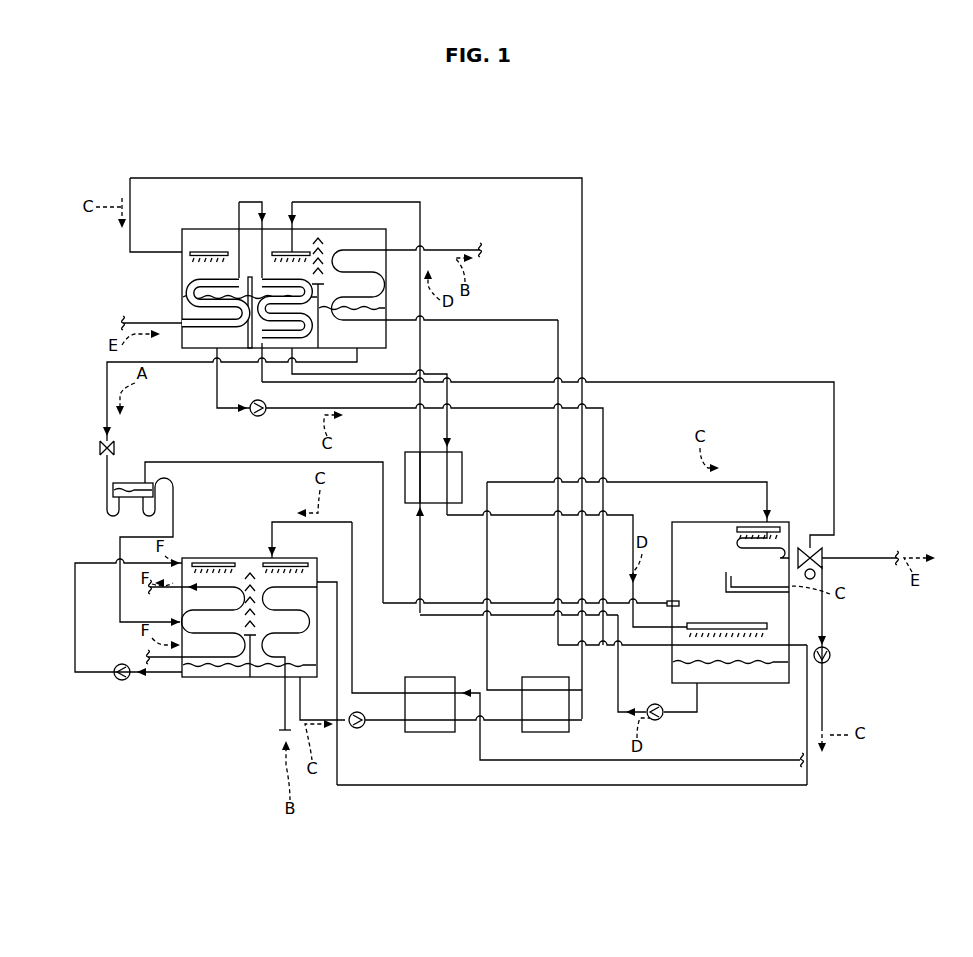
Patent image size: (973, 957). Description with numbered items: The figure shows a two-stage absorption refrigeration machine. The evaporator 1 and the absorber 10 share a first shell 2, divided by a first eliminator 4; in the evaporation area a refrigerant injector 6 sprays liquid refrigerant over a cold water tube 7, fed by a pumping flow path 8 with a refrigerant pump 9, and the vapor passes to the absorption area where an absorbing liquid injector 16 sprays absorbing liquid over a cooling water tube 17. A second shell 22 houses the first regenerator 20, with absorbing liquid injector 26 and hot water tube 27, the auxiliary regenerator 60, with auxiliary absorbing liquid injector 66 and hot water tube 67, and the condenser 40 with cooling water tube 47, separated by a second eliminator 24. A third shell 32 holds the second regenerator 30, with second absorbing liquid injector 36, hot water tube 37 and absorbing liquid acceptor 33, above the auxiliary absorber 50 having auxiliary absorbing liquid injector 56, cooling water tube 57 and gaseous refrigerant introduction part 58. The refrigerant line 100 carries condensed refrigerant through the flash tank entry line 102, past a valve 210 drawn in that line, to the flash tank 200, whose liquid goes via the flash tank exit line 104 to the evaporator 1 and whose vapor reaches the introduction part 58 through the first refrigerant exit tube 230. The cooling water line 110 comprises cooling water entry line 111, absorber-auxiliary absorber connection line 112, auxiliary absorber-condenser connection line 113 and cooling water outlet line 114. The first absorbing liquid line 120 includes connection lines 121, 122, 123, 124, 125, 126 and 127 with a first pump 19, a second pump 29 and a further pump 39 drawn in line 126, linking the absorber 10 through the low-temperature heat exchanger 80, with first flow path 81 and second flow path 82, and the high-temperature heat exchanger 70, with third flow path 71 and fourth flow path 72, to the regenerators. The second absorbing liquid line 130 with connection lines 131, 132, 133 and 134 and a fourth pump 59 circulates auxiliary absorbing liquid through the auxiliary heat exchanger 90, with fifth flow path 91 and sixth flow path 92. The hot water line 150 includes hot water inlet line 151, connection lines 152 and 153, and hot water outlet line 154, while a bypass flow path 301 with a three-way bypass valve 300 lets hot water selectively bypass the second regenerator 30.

The evaporator 1 is at (186, 700).
The first shell 2 is at (184, 557).
The first eliminator 4 is at (250, 572).
The refrigerant injector 6 is at (211, 562).
The cold water tube 7 is at (228, 662).
The pumping flow path 8 is at (74, 657).
The refrigerant pump 9 is at (116, 680).
The absorber 10 is at (256, 700).
The absorbing liquid injector 16 is at (289, 562).
The cooling water tube 17 is at (298, 628).
The first pump 19 is at (357, 729).
The first regenerator 20 is at (172, 238).
The second shell 22 is at (184, 228).
The second eliminator 24 is at (322, 233).
The absorbing liquid injector 26 is at (195, 258).
The hot water tube 27 is at (195, 290).
The second pump 29 is at (258, 418).
The second regenerator 30 is at (800, 520).
The third shell 32 is at (772, 520).
The absorbing liquid acceptor 33 is at (790, 578).
The second absorbing liquid injector 36 is at (740, 525).
The hot water tube 37 is at (722, 545).
The pump 39 is at (832, 656).
The condenser 40 is at (388, 207).
The cooling water tube 47 is at (383, 292).
The auxiliary absorber 50 is at (778, 700).
The auxiliary absorbing liquid injector 56 is at (745, 621).
The cooling water tube 57 is at (786, 644).
The gaseous refrigerant introduction part 58 is at (680, 601).
The fourth pump 59 is at (658, 721).
The auxiliary regenerator 60 is at (281, 205).
The auxiliary absorbing liquid injector 66 is at (298, 250).
The hot water tube 67 is at (283, 290).
The high-temperature heat exchanger 70 is at (570, 725).
The third flow path 71 is at (547, 726).
The fourth flow path 72 is at (546, 688).
The low-temperature heat exchanger 80 is at (448, 733).
The first flow path 81 is at (430, 726).
The second flow path 82 is at (429, 690).
The auxiliary heat exchanger 90 is at (404, 462).
The fifth flow path 91 is at (418, 505).
The sixth flow path 92 is at (449, 469).
The refrigerant line 100 is at (80, 377).
The flash tank entry line 102 is at (106, 402).
The flash tank exit line 104 is at (119, 540).
The cooling water line 110 is at (406, 800).
The cooling water entry line 111 is at (280, 735).
The absorber-auxiliary absorber connection line 112 is at (371, 788).
The auxiliary absorber-condenser connection line 113 is at (556, 636).
The cooling water outlet line 114 is at (462, 248).
The first absorbing liquid line 120 is at (471, 762).
The absorber-low-temperature heat exchanger connection line 121 is at (317, 718).
The low-temperature heat exchanger-high-temperature heat exchanger connection line 122 is at (500, 722).
The high-temperature heat exchanger-first regenerator connection line 123 is at (584, 275).
The first regenerator-high-temperature heat exchanger connection line 124 is at (216, 387).
The high-temperature heat exchanger-second regenerator connection line 125 is at (489, 567).
The second regenerator-low-temperature heat exchanger connection line 126 is at (824, 622).
The low-temperature heat exchanger-absorber connection line 127 is at (354, 639).
The second absorbing liquid line 130 is at (493, 356).
The auxiliary absorber-auxiliary heat exchanger connection line 131 is at (620, 692).
The auxiliary heat exchanger-auxiliary regenerator connection line 132 is at (422, 340).
The auxiliary regenerator-auxiliary heat exchanger connection line 133 is at (449, 377).
The auxiliary heat exchanger-auxiliary absorber connection line 134 is at (455, 517).
The hot water line 150 is at (78, 317).
The hot water inlet line 151 is at (125, 322).
The first regenerator-auxiliary regenerator connection line 152 is at (250, 198).
The auxiliary regenerator-second regenerator connection line 153 is at (672, 381).
The hot water outlet line 154 is at (882, 556).
The flash tank 200 is at (95, 492).
The valve 210 is at (110, 450).
The first refrigerant exit tube 230 is at (142, 480).
The bypass valve 300 is at (824, 553).
The bypass flow path 301 is at (814, 540).